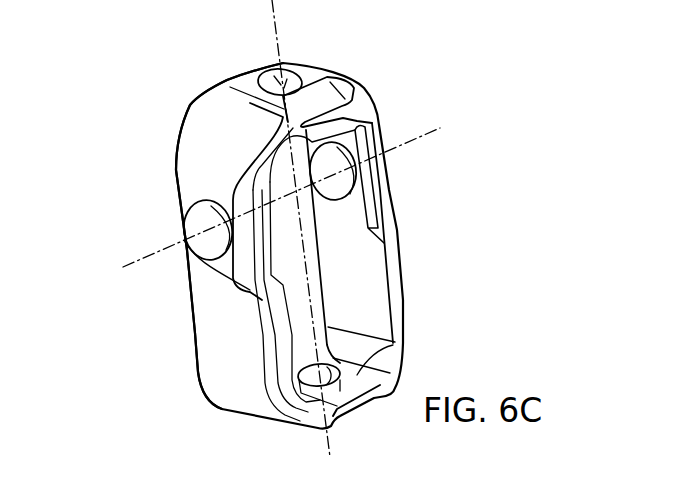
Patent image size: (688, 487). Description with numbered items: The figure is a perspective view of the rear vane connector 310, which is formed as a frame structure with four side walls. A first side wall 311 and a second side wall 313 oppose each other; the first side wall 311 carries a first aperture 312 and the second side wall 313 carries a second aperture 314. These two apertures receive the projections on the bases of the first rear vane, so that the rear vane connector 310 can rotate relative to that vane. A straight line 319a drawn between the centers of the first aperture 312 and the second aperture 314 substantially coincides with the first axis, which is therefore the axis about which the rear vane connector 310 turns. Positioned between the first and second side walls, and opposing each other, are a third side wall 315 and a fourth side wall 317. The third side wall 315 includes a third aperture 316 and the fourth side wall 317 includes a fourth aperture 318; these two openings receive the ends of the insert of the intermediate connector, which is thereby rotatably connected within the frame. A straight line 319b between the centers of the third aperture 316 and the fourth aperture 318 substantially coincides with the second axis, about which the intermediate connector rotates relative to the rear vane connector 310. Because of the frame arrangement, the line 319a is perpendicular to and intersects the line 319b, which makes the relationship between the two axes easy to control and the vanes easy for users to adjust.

The rear vane connector 310 is at (128, 105).
The first side wall 311 is at (204, 111).
The first aperture 312 is at (262, 72).
The second side wall 313 is at (397, 338).
The second aperture 314 is at (341, 378).
The third side wall 315 is at (207, 323).
The third aperture 316 is at (184, 228).
The fourth side wall 317 is at (362, 277).
The fourth aperture 318 is at (356, 175).
The straight line between centers of the first and second apertures 319a is at (335, 240).
The straight line between centers of the third and fourth apertures 319b is at (331, 191).